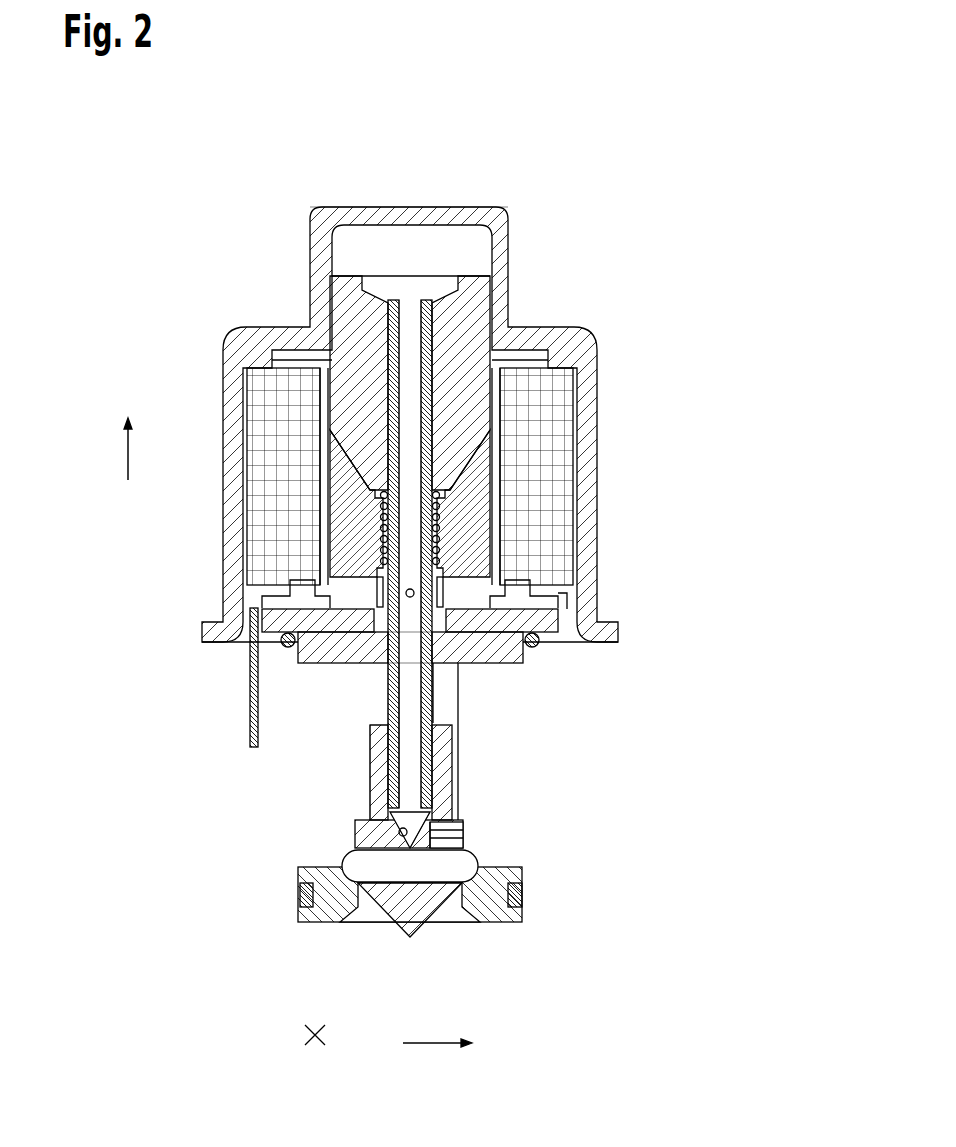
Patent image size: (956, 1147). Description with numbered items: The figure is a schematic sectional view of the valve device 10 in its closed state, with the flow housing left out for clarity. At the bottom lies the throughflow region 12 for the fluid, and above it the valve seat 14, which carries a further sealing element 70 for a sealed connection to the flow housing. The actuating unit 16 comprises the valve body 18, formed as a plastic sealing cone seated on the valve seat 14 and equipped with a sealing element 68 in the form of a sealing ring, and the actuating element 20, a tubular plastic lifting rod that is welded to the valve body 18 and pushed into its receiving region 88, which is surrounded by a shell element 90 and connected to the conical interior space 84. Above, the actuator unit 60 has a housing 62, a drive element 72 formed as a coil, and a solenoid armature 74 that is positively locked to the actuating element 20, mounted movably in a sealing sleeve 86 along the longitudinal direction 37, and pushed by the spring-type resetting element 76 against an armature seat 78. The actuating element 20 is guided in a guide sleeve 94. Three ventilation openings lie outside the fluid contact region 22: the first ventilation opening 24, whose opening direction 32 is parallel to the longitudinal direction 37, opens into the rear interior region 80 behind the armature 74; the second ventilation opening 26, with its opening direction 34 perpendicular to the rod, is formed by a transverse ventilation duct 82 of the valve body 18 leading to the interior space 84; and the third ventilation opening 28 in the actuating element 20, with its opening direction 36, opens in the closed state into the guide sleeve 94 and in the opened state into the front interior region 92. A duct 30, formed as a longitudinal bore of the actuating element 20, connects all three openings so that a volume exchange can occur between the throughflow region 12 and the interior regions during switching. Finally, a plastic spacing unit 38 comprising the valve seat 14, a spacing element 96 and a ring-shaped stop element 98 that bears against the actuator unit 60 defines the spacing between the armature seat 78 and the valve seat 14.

The valve device 10 is at (203, 170).
The throughflow region 12 is at (480, 802).
The valve seat 14 is at (500, 873).
The actuating unit 16 is at (349, 741).
The valve body 18 is at (363, 828).
The actuating element 20 is at (392, 694).
The fluid contact region 22 is at (364, 676).
The first ventilation opening 24 is at (410, 276).
The second ventilation opening 26 is at (452, 832).
The third ventilation opening 28 is at (417, 593).
The duct 30 is at (412, 415).
The opening direction 32 is at (126, 465).
The opening direction 34 is at (425, 1045).
The opening direction 36 is at (313, 1040).
The longitudinal direction 37 is at (126, 465).
The spacing unit 38 is at (470, 750).
The actuator unit 60 is at (545, 298).
The housing 62 is at (347, 212).
The sealing element 68 is at (365, 865).
The further sealing element 70 is at (303, 893).
The drive element 72 is at (548, 487).
The armature 74 is at (360, 418).
The resetting element 76 is at (440, 560).
The armature seat 78 is at (472, 520).
The rear interior region 80 is at (455, 252).
The ventilation duct 82 is at (440, 833).
The interior space 84 is at (413, 832).
The sealing sleeve 86 is at (350, 527).
The receiving region 88 is at (376, 761).
The shell element 90 is at (375, 792).
The front interior region 92 is at (335, 487).
The guide sleeve 94 is at (372, 590).
The spacing element 96 is at (445, 708).
The stop element 98 is at (497, 652).